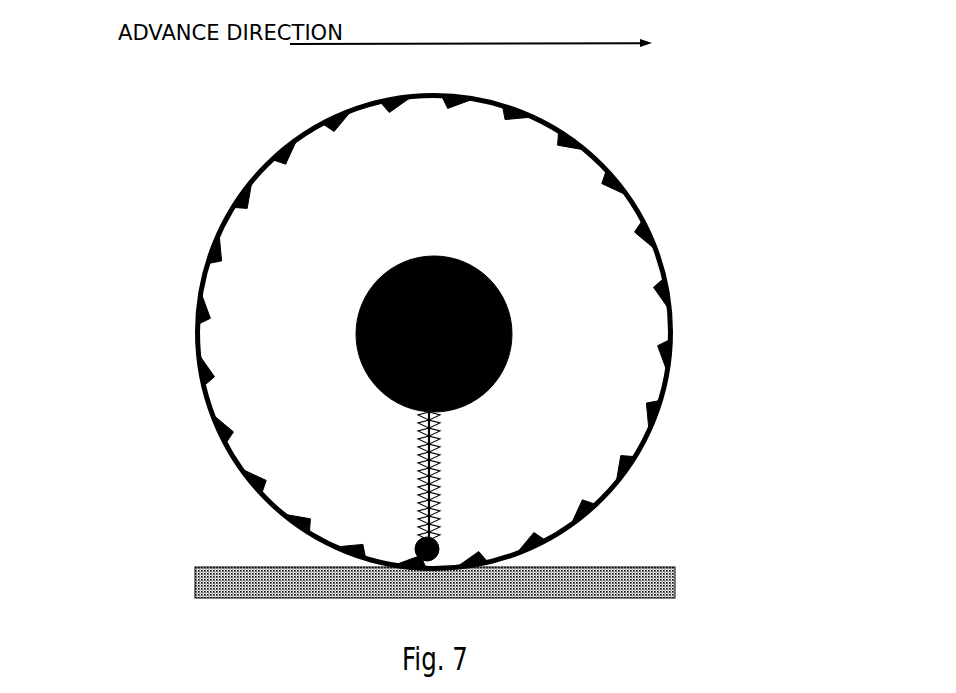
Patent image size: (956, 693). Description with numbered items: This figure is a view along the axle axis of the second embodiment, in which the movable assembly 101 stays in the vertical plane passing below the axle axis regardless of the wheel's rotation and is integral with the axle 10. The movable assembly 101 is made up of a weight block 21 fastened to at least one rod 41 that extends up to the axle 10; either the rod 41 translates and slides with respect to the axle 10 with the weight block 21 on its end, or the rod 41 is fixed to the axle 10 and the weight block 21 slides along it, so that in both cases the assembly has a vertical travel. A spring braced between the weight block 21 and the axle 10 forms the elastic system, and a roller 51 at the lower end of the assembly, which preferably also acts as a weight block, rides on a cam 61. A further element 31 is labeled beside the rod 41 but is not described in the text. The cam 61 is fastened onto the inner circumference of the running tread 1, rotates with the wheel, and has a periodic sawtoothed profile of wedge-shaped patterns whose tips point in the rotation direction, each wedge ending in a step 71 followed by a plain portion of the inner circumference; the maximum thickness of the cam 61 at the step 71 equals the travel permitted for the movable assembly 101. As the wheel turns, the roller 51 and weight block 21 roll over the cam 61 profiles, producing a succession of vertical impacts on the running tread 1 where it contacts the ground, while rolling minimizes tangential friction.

The running tread 1 is at (535, 555).
The axle 10 is at (348, 322).
The weight block 21 is at (408, 550).
The ratchet teeth 31 is at (453, 470).
The rod 41 is at (454, 432).
The roller 51 is at (289, 549).
The cam 61 is at (622, 486).
The step 71 is at (611, 474).
The movable assembly 101 is at (423, 443).